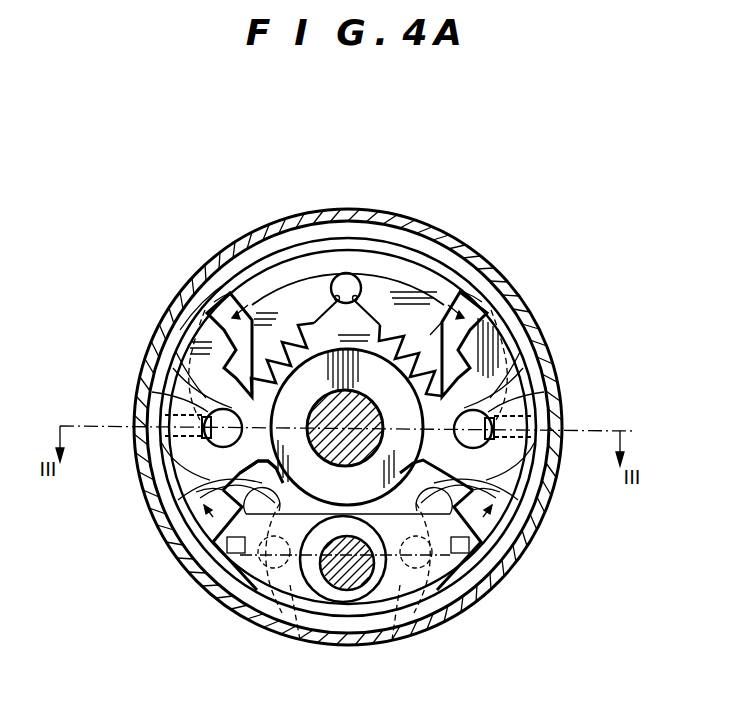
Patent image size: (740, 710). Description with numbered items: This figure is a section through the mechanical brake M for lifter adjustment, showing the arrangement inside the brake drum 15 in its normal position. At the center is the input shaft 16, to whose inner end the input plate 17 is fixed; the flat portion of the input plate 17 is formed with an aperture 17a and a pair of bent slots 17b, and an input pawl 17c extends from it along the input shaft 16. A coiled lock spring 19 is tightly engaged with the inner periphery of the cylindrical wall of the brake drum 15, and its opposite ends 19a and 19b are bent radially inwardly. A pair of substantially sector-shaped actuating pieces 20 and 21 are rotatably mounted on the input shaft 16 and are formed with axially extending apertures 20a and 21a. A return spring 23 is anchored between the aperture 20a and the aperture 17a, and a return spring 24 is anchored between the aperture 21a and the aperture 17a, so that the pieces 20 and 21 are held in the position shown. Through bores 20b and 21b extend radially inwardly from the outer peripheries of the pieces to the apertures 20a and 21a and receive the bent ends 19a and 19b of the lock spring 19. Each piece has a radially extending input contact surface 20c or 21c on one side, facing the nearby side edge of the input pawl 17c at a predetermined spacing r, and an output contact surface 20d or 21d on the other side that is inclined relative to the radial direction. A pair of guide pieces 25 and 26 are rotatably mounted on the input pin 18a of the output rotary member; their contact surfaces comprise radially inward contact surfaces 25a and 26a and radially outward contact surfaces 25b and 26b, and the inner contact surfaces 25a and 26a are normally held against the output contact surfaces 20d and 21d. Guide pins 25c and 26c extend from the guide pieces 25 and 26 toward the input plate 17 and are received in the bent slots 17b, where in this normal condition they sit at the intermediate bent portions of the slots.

The brake drum 15 is at (222, 262).
The input shaft 16 is at (372, 440).
The input plate 17 is at (302, 254).
The aperture 17a is at (362, 290).
The bent slots 17b is at (200, 498).
The pawl 17c is at (336, 258).
The input pin 18a is at (346, 592).
The lock spring 19 is at (494, 300).
The bent end of lock spring 19a is at (198, 425).
The bent end of lock spring 19b is at (500, 424).
The actuating piece 20 is at (194, 345).
The aperture 20a is at (196, 362).
The through bore 20b is at (162, 470).
The input contact surface 20c is at (212, 312).
The output contact surface 20d is at (260, 477).
The actuating piece 21 is at (500, 354).
The aperture 21a is at (510, 392).
The through bore 21b is at (524, 465).
The input contact surface 21c is at (508, 320).
The output contact surface 21d is at (462, 548).
The return spring 23 is at (302, 340).
The return spring 24 is at (443, 322).
The guide piece 25 is at (248, 598).
The inner contact surface 25a is at (210, 530).
The outer contact surface 25b is at (240, 576).
The guide pin 25c is at (280, 600).
The guide piece 26 is at (398, 612).
The inner contact surface 26a is at (488, 518).
The outer contact surface 26b is at (458, 572).
The guide pin 26c is at (428, 596).
The predetermined spacing r is at (500, 256).
The mechanical brake M is at (612, 296).